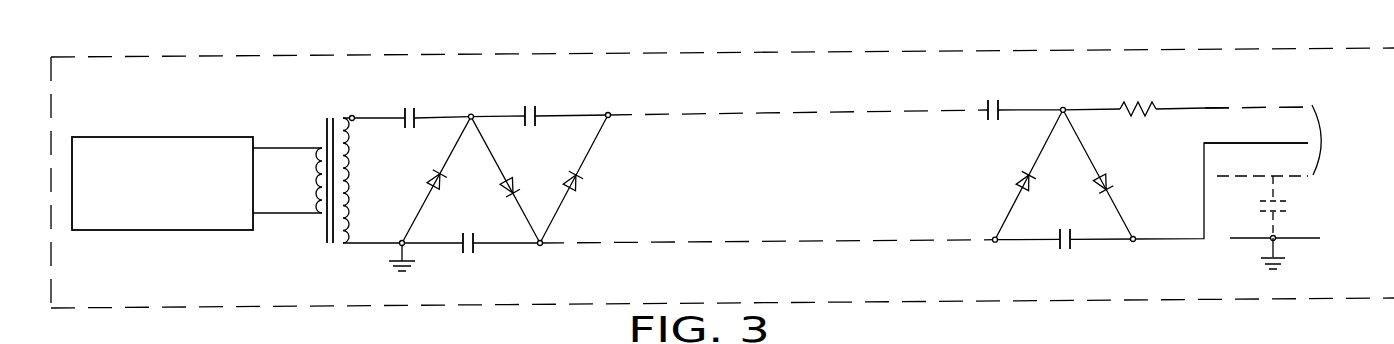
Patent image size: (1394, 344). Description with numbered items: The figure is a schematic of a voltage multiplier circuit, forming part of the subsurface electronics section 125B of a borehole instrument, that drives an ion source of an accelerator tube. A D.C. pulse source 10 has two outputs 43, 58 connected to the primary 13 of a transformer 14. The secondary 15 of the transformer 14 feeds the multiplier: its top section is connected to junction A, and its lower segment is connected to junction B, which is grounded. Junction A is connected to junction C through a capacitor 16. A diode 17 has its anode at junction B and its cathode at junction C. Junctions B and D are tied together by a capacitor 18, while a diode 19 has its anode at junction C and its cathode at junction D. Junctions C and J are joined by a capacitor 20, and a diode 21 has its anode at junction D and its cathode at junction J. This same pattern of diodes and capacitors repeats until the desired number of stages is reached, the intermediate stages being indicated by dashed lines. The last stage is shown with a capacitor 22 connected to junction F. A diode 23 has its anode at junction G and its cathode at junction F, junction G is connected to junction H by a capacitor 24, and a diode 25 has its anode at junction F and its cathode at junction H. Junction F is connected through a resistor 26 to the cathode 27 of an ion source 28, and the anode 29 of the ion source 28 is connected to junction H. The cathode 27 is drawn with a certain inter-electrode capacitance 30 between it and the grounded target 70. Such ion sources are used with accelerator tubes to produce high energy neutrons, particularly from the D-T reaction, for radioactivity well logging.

The subsurface electronics section 125B is at (575, 24).
The D.C. pulse source 10 is at (167, 137).
The output 43 is at (257, 142).
The output 58 is at (257, 218).
The primary 13 is at (310, 173).
The transformer 14 is at (328, 111).
The secondary 15 is at (338, 247).
The capacitor 16 is at (408, 104).
The diode 17 is at (420, 176).
The capacitor 18 is at (470, 250).
The diode 19 is at (500, 194).
The capacitor 20 is at (527, 104).
The diode 21 is at (582, 185).
The capacitor 22 is at (992, 96).
The diode 23 is at (1017, 175).
The capacitor 24 is at (1067, 250).
The diode 25 is at (1115, 178).
The resistor 26 is at (1142, 96).
The cathode 27 is at (1245, 106).
The ion source 28 is at (1367, 137).
The anode 29 is at (1278, 143).
The inter-electrode capacitance 30 is at (1290, 208).
The grounded target 70 is at (1298, 238).
The junction A is at (352, 115).
The junction B is at (408, 249).
The junction C is at (470, 113).
The junction D is at (542, 248).
The junction J is at (608, 112).
The junction F is at (1063, 108).
The junction G is at (995, 243).
The junction H is at (1133, 243).